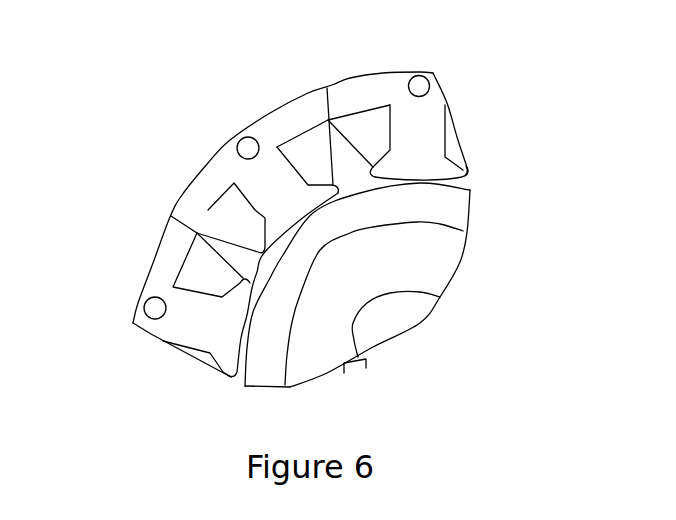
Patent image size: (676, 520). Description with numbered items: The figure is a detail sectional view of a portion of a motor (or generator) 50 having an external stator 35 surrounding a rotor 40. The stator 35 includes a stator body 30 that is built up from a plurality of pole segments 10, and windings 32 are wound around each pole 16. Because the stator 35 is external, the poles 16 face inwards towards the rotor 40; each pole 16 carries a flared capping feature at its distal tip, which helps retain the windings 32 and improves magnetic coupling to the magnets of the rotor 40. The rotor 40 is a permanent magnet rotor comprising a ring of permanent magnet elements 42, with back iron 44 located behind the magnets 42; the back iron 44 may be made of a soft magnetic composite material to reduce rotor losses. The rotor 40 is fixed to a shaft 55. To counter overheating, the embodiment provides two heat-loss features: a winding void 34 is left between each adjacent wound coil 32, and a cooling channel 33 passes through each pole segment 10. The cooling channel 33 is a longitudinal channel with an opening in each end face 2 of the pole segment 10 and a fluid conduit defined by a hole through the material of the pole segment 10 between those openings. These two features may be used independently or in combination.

The end face 2 is at (208, 188).
The pole segment 10 is at (315, 75).
The pole 16 is at (402, 145).
The stator body 30 is at (153, 331).
The windings 32 is at (315, 147).
The cooling channel 33 is at (247, 146).
The winding void 34 is at (347, 157).
The stator 35 is at (122, 254).
The rotor 40 is at (263, 387).
The permanent magnet elements 42 is at (477, 213).
The back iron 44 is at (460, 262).
The motor 50 is at (500, 127).
The shaft 55 is at (397, 328).